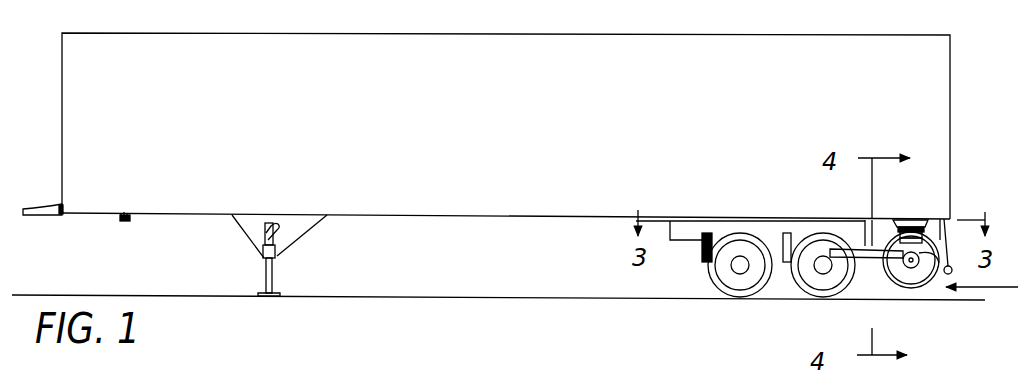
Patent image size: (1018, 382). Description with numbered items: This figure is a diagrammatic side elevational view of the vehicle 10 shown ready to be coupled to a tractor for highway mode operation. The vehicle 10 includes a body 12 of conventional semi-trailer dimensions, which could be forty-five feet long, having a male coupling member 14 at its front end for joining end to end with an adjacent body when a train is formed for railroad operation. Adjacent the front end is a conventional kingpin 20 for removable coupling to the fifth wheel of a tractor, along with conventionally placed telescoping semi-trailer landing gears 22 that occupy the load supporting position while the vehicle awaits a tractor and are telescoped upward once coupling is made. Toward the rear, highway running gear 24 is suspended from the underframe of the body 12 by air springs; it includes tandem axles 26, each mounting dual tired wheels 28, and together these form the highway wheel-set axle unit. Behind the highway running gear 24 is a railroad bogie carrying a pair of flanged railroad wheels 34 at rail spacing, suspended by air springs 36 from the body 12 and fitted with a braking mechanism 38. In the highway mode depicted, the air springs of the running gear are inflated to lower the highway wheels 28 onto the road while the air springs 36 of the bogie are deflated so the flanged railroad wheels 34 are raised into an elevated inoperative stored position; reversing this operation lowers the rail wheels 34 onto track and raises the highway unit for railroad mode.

The vehicle 10 is at (976, 109).
The body 12 is at (942, 63).
The male coupling member 14 is at (38, 218).
The kingpin 20 is at (128, 221).
The landing gears 22 is at (279, 271).
The highway running gear 24 is at (686, 318).
The tandem axles 26 is at (735, 262).
The dual tired wheels 28 is at (717, 284).
The flanged railroad wheels 34 is at (921, 297).
The air springs 36 is at (906, 220).
The braking mechanism 38 is at (876, 232).